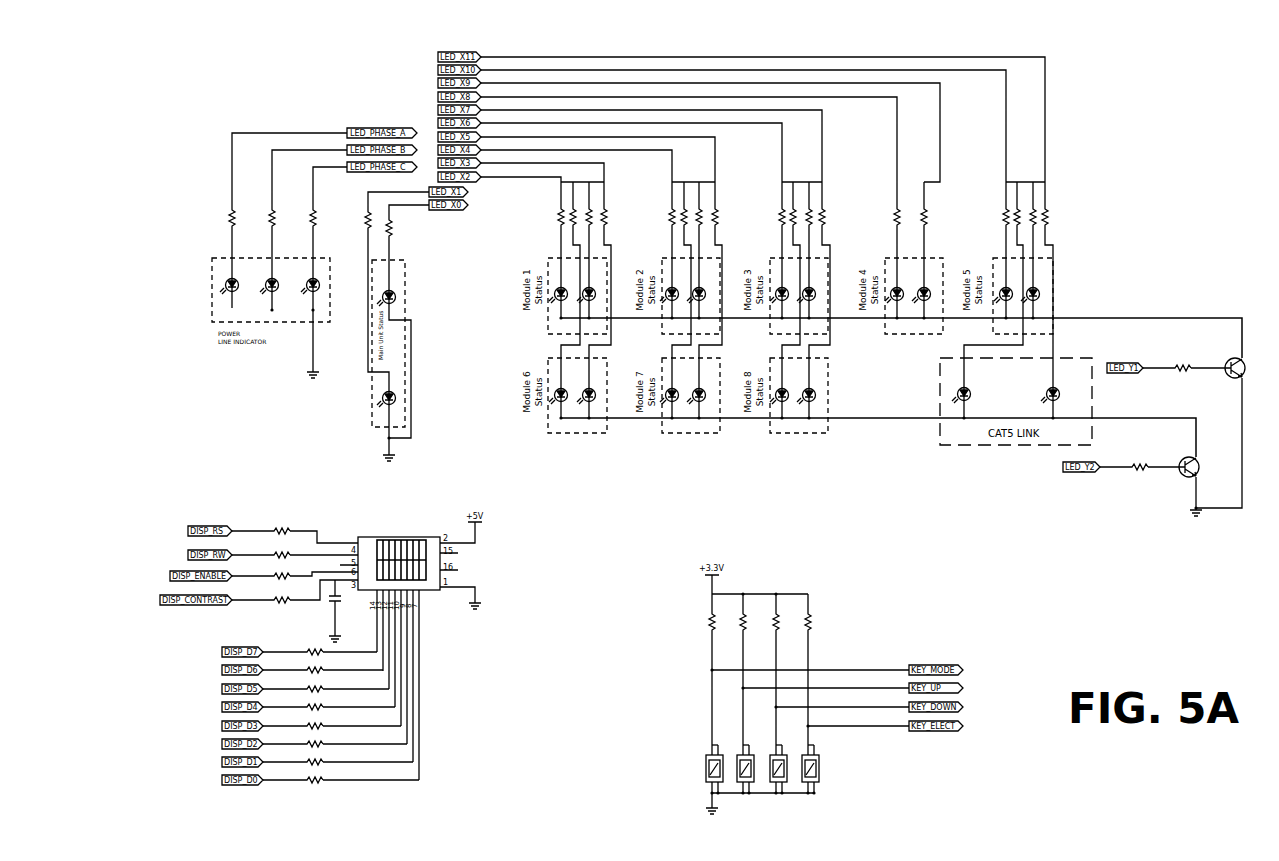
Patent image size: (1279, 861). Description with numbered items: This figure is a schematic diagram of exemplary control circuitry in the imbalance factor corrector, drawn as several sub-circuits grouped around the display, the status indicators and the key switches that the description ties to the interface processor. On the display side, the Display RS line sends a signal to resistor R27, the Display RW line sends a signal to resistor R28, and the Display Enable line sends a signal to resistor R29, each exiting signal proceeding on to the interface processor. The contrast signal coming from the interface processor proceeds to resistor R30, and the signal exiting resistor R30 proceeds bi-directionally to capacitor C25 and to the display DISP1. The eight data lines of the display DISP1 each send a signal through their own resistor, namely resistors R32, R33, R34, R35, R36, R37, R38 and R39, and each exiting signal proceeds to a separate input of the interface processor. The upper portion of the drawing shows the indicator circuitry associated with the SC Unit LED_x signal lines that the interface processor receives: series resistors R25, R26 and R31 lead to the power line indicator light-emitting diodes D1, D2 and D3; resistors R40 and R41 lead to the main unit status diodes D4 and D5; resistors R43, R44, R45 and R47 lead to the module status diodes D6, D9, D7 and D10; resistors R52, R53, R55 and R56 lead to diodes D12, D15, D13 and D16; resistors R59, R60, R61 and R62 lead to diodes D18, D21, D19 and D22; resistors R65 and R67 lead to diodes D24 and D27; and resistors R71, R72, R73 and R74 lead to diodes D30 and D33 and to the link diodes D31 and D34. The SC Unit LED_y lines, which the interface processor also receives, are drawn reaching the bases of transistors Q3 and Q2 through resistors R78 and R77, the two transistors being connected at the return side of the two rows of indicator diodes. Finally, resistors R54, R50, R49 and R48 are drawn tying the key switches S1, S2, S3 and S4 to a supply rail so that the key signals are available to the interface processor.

The resistor 1K R25 is at (237, 222).
The resistor 1K R26 is at (277, 222).
The resistor 1K R31 is at (318, 222).
The resistor 1K R40 is at (373, 224).
The resistor 1K R41 is at (394, 233).
The resistor 470R R43 is at (565, 213).
The resistor 470R R44 is at (577, 213).
The resistor 470R R45 is at (593, 213).
The resistor 470R R47 is at (608, 213).
The resistor 470R R52 is at (676, 213).
The resistor 470R R53 is at (688, 213).
The resistor 470R R55 is at (703, 213).
The resistor 470R R56 is at (719, 213).
The resistor 470R R59 is at (786, 213).
The resistor 470R R60 is at (797, 213).
The resistor 470R R61 is at (813, 213).
The resistor 470R R62 is at (826, 213).
The resistor 470R R65 is at (901, 213).
The resistor 470R R67 is at (928, 213).
The resistor 470R R71 is at (1010, 213).
The resistor 470R R72 is at (1021, 213).
The resistor 470R R73 is at (1037, 213).
The resistor 470R R74 is at (1049, 213).
The resistor 10K R77 is at (1140, 467).
The resistor 10K R78 is at (1183, 368).
The power line indicator LED D1 is at (229, 287).
The power line indicator LED D2 is at (269, 287).
The power line indicator LED D3 is at (310, 287).
The main unit status LED D4 is at (386, 299).
The main unit status LED D5 is at (386, 400).
The module 1 status LED D6 is at (562, 292).
The module 1 status LED D9 is at (590, 292).
The module 6 status LED D7 is at (562, 393).
The module 6 status LED D10 is at (590, 390).
The module 2 status LED D12 is at (673, 289).
The module 2 status LED D15 is at (700, 289).
The module 7 status LED D13 is at (673, 390).
The module 7 status LED D16 is at (700, 390).
The module 3 status LED D18 is at (783, 289).
The module 3 status LED D21 is at (810, 289).
The module 8 status LED D19 is at (783, 390).
The module 8 status LED D22 is at (810, 390).
The module 4 status LED D24 is at (898, 289).
The module 4 status LED D27 is at (925, 289).
The module 5 status LED D30 is at (1007, 289).
The module 5 status LED D33 is at (1034, 289).
The CAT5 link LED D31 is at (965, 389).
The CAT5 link LED D34 is at (1054, 389).
The NPN transistor Q2 is at (1189, 461).
The NPN transistor Q3 is at (1235, 362).
The display DISP1 is at (396, 558).
The capacitor C25 is at (341, 611).
The resistor R27 is at (279, 533).
The resistor R28 is at (279, 557).
The resistor R29 is at (279, 578).
The resistor R30 is at (279, 602).
The resistor R32 is at (311, 654).
The resistor R33 is at (311, 672).
The resistor R34 is at (311, 691).
The resistor R35 is at (311, 709).
The resistor R36 is at (311, 728).
The resistor R37 is at (311, 746).
The resistor R38 is at (311, 764).
The resistor R39 is at (311, 782).
The pull-up resistor 10K R54 is at (715, 623).
The pull-up resistor 10K R50 is at (746, 623).
The pull-up resistor 10K R49 is at (779, 623).
The pull-up resistor 10K R48 is at (812, 623).
The key switch S1 is at (709, 769).
The key switch S2 is at (740, 769).
The key switch S3 is at (773, 769).
The key switch S4 is at (805, 769).